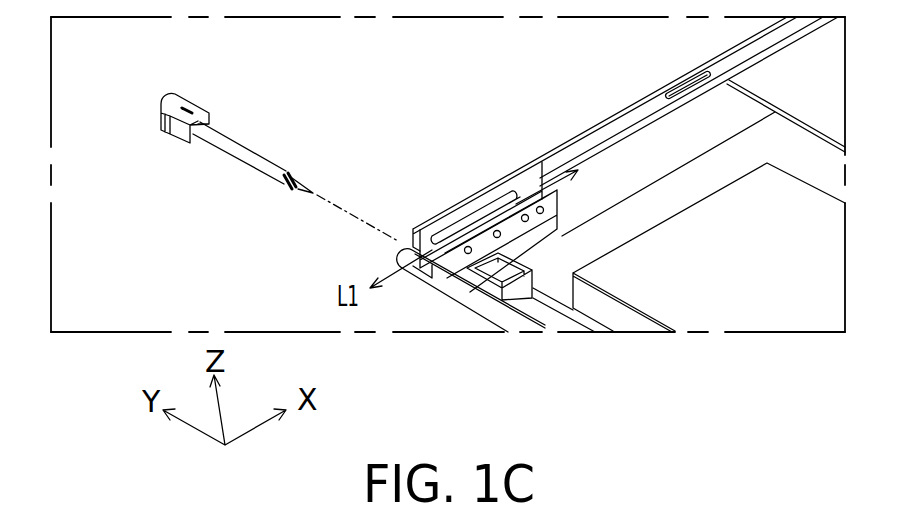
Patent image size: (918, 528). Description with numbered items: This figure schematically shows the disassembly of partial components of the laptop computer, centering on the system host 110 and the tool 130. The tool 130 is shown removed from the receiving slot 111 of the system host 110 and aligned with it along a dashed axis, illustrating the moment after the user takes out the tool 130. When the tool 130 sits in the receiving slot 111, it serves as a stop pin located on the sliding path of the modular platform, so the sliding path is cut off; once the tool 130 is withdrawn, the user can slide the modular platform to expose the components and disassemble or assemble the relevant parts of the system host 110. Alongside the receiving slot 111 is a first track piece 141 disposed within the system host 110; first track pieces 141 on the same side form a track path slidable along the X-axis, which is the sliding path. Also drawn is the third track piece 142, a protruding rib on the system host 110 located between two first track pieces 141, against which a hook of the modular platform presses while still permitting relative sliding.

The system host 110 is at (603, 121).
The receiving slot 111 is at (480, 288).
The tool 130 is at (212, 116).
The first track piece 141 is at (495, 190).
The third track piece 142 is at (690, 88).